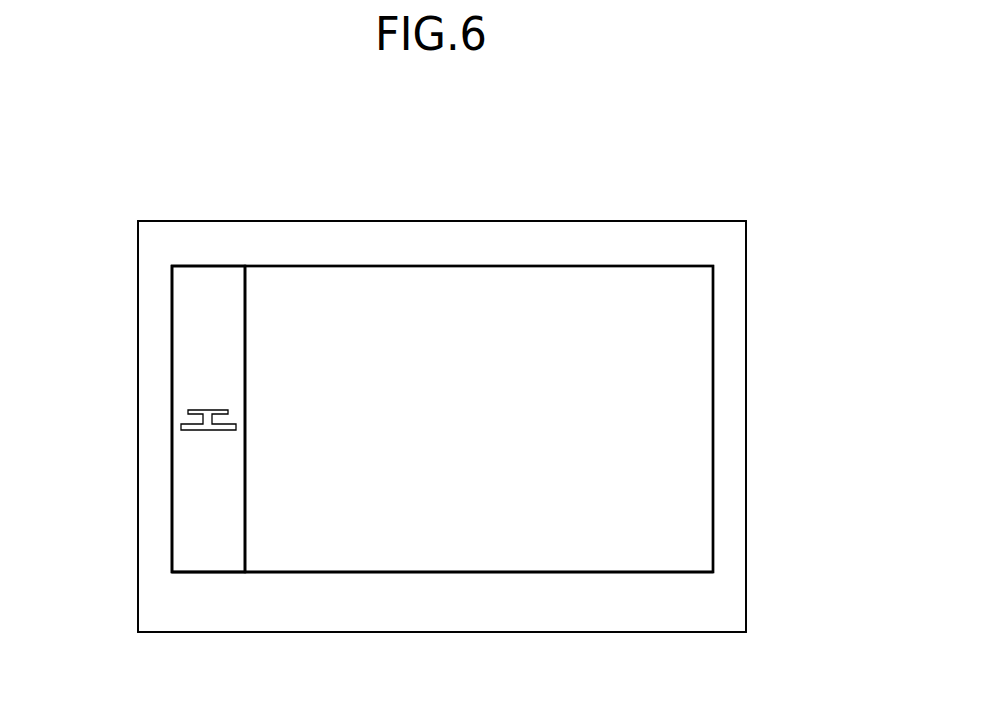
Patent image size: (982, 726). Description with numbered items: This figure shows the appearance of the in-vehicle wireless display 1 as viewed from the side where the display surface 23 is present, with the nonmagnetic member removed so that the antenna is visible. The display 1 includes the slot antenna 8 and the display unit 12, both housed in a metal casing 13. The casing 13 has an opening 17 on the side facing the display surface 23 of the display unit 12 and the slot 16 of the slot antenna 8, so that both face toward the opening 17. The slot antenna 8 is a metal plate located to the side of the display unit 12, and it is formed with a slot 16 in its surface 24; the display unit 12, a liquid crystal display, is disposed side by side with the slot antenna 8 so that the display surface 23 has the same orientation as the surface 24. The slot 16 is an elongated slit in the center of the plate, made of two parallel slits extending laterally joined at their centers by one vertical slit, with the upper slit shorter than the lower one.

The display 1 is at (442, 184).
The casing 13 is at (733, 376).
The display unit 12 is at (547, 547).
The display surface 23 is at (434, 500).
The opening 17 is at (287, 573).
The surface 24 is at (208, 492).
The slot antenna 8 is at (197, 465).
The slot 16 is at (194, 409).